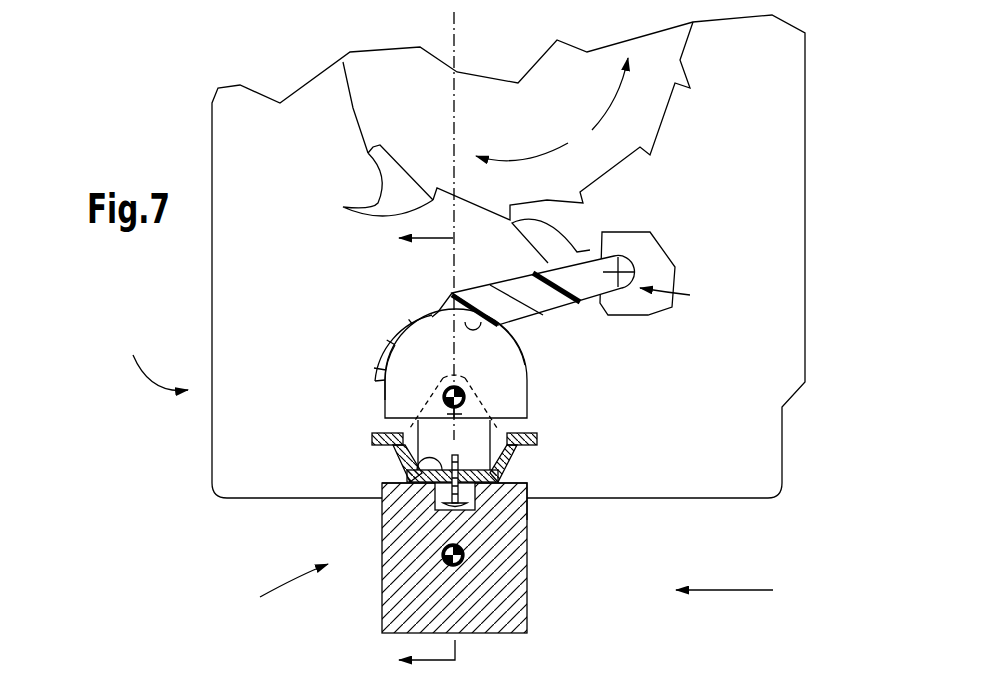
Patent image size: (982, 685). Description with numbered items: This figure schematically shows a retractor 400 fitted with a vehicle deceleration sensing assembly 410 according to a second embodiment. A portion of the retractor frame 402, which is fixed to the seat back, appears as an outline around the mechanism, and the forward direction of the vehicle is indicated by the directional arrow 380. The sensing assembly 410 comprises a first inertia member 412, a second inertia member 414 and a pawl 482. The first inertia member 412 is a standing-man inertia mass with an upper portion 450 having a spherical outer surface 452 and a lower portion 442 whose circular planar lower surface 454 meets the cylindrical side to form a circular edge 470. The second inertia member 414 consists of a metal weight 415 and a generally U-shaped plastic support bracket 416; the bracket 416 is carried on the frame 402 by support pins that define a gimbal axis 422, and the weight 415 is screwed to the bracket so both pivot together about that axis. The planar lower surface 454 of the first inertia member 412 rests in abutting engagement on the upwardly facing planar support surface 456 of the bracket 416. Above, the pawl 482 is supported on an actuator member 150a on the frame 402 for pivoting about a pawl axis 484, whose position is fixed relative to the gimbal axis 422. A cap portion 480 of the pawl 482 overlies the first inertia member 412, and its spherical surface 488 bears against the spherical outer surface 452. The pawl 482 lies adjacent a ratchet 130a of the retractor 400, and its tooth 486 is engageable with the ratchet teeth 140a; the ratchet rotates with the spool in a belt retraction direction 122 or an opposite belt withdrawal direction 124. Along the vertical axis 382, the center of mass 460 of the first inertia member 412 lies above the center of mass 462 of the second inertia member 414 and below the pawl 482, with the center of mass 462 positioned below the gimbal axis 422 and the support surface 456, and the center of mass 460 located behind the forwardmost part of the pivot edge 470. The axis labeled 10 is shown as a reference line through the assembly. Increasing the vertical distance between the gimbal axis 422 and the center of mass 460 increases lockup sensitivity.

The axis 10 is at (408, 451).
The belt retraction direction 122 is at (522, 147).
The belt withdrawal direction 124 is at (597, 94).
The ratchet 130a is at (351, 110).
The ratchet teeth 140a is at (343, 207).
The actuator member 150a is at (647, 308).
The directional arrow 380 is at (724, 576).
The vertical axis 382 is at (455, 43).
The retractor 400 is at (150, 363).
The frame 402 is at (212, 462).
The vehicle deceleration sensing assembly 410 is at (270, 587).
The first inertia member 412 is at (532, 380).
The second inertia member 414 is at (541, 514).
The metal weight 415 is at (527, 600).
The support bracket 416 is at (541, 441).
The gimbal axis 422 is at (450, 415).
The lower portion 442 is at (481, 433).
The upper portion 450 is at (514, 353).
The spherical outer surface 452 is at (378, 390).
The planar lower surface 454 is at (412, 492).
The support surface 456 is at (393, 458).
The center of mass 460 is at (450, 393).
The center of mass 462 is at (462, 553).
The circular edge 470 is at (383, 505).
The cap portion 480 is at (410, 322).
The pawl 482 is at (690, 293).
The pawl axis 484 is at (630, 260).
The tooth 486 is at (562, 240).
The spherical surface 488 is at (478, 307).